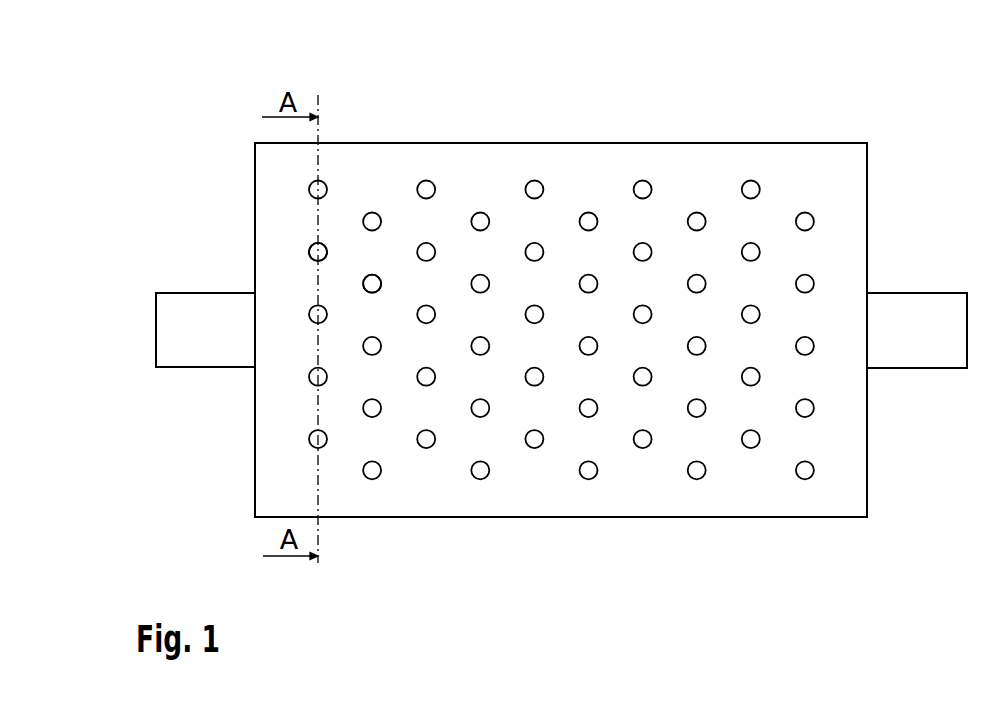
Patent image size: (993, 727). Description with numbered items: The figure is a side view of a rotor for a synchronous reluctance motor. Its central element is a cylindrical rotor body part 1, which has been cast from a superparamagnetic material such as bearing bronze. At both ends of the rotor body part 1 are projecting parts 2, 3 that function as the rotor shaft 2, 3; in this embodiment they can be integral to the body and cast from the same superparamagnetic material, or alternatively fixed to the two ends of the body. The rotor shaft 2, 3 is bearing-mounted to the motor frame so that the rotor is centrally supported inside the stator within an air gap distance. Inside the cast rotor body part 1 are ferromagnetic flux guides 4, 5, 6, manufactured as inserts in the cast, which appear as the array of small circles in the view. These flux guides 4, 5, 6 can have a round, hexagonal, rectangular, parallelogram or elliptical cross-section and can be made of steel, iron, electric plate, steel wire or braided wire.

The rotor body part 1 is at (636, 144).
The projecting part (rotor shaft) 2 is at (185, 292).
The projecting part (rotor shaft) 3 is at (905, 292).
The ferromagnetic flux guide 4 is at (324, 183).
The ferromagnetic flux guide 5 is at (325, 245).
The ferromagnetic flux guide 6 is at (380, 277).